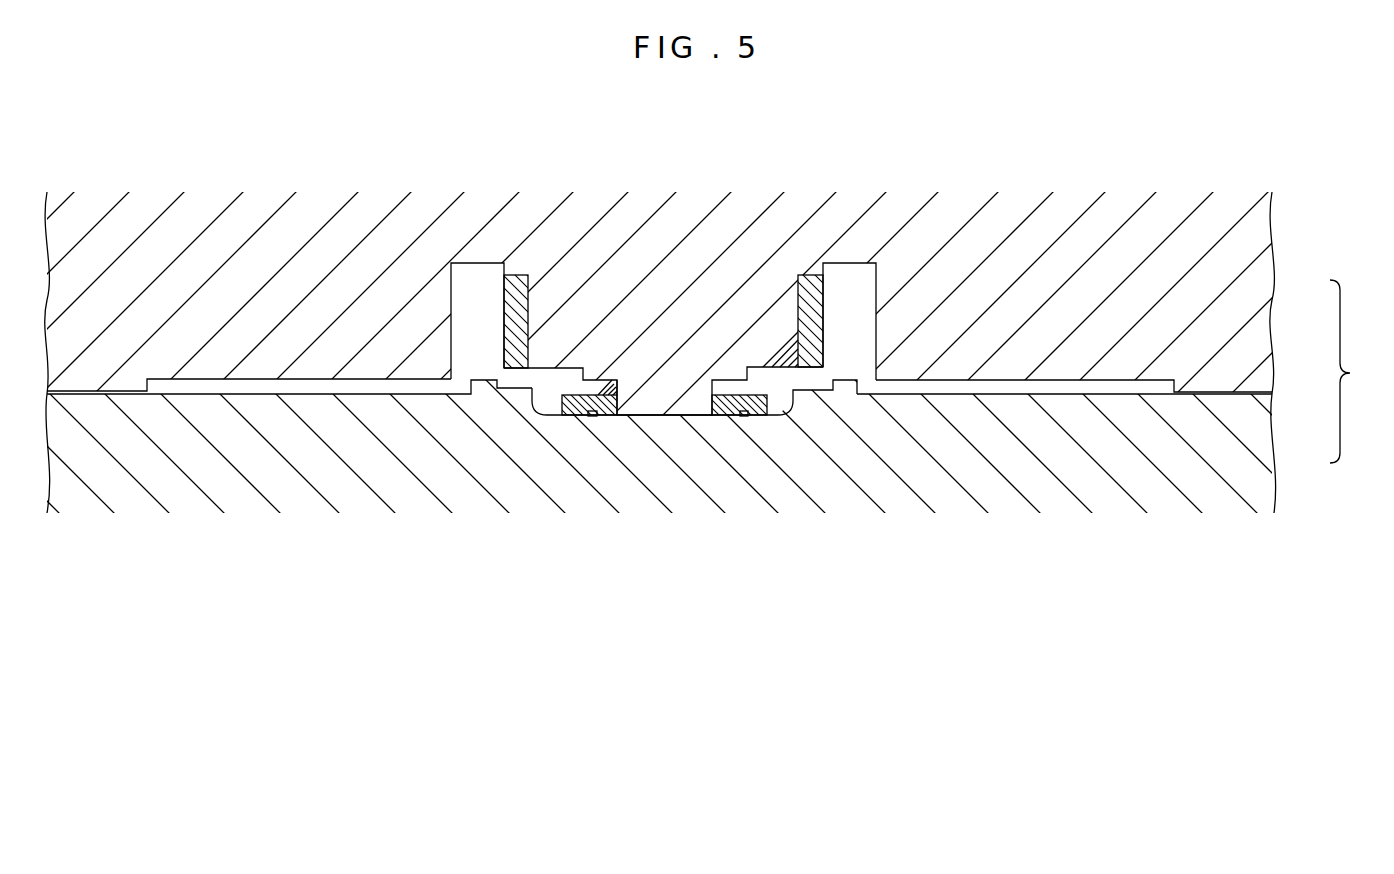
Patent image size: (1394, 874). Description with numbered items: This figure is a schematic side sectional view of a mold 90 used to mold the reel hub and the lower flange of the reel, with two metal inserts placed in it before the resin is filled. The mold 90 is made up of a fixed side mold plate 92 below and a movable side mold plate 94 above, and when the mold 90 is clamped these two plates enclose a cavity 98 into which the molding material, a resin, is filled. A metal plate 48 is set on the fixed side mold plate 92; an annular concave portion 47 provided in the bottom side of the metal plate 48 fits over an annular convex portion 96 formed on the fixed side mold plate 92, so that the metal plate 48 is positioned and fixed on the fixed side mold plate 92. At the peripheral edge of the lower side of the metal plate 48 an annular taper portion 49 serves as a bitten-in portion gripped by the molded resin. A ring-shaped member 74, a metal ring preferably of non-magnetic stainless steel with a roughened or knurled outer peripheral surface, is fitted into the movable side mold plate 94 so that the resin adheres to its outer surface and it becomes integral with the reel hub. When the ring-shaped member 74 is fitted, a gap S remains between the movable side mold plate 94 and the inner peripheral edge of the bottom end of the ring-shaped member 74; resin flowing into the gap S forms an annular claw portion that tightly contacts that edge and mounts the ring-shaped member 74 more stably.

The annular concave portion 47 is at (620, 378).
The metal plate 48 is at (718, 417).
The annular taper portion 49 is at (763, 410).
The ring-shaped member 74 is at (529, 301).
The mold 90 is at (1360, 371).
The fixed side mold plate 92 is at (1248, 460).
The movable side mold plate 94 is at (1235, 300).
The annular convex portion 96 is at (757, 418).
The cavity 98 is at (862, 286).
The gap S is at (537, 366).